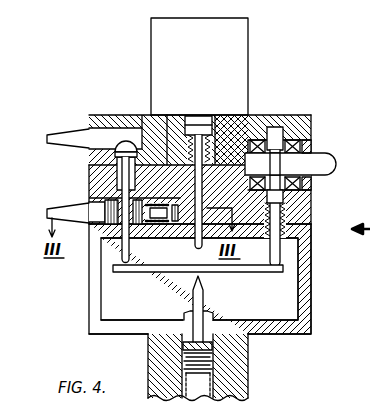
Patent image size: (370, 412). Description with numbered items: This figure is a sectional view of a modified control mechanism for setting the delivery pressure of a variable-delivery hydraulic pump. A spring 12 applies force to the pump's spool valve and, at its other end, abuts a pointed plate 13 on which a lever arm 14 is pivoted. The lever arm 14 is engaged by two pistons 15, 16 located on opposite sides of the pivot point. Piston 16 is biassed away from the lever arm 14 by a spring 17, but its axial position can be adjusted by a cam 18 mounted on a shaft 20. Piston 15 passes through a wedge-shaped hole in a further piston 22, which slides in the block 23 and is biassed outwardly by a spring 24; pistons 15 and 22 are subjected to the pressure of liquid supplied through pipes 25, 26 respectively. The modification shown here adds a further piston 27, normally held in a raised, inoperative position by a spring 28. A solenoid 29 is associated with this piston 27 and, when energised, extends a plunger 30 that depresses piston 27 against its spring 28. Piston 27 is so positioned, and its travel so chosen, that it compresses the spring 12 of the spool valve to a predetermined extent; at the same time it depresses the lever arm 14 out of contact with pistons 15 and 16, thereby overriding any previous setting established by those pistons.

The spring 12 is at (163, 362).
The pointed plate 13 is at (185, 313).
The lever arm 14 is at (128, 273).
The piston 15 is at (131, 249).
The piston 16 is at (218, 279).
The spring 17 is at (329, 169).
The cam 18 is at (305, 184).
The shaft 20 is at (317, 160).
The further piston 22 is at (110, 203).
The block 23 is at (97, 168).
The spring 24 is at (167, 115).
The pipe 25 is at (67, 141).
The pipe 26 is at (67, 211).
The further piston 27 is at (212, 150).
The spring 28 is at (251, 130).
The solenoid 29 is at (233, 31).
The plunger 30 is at (198, 115).